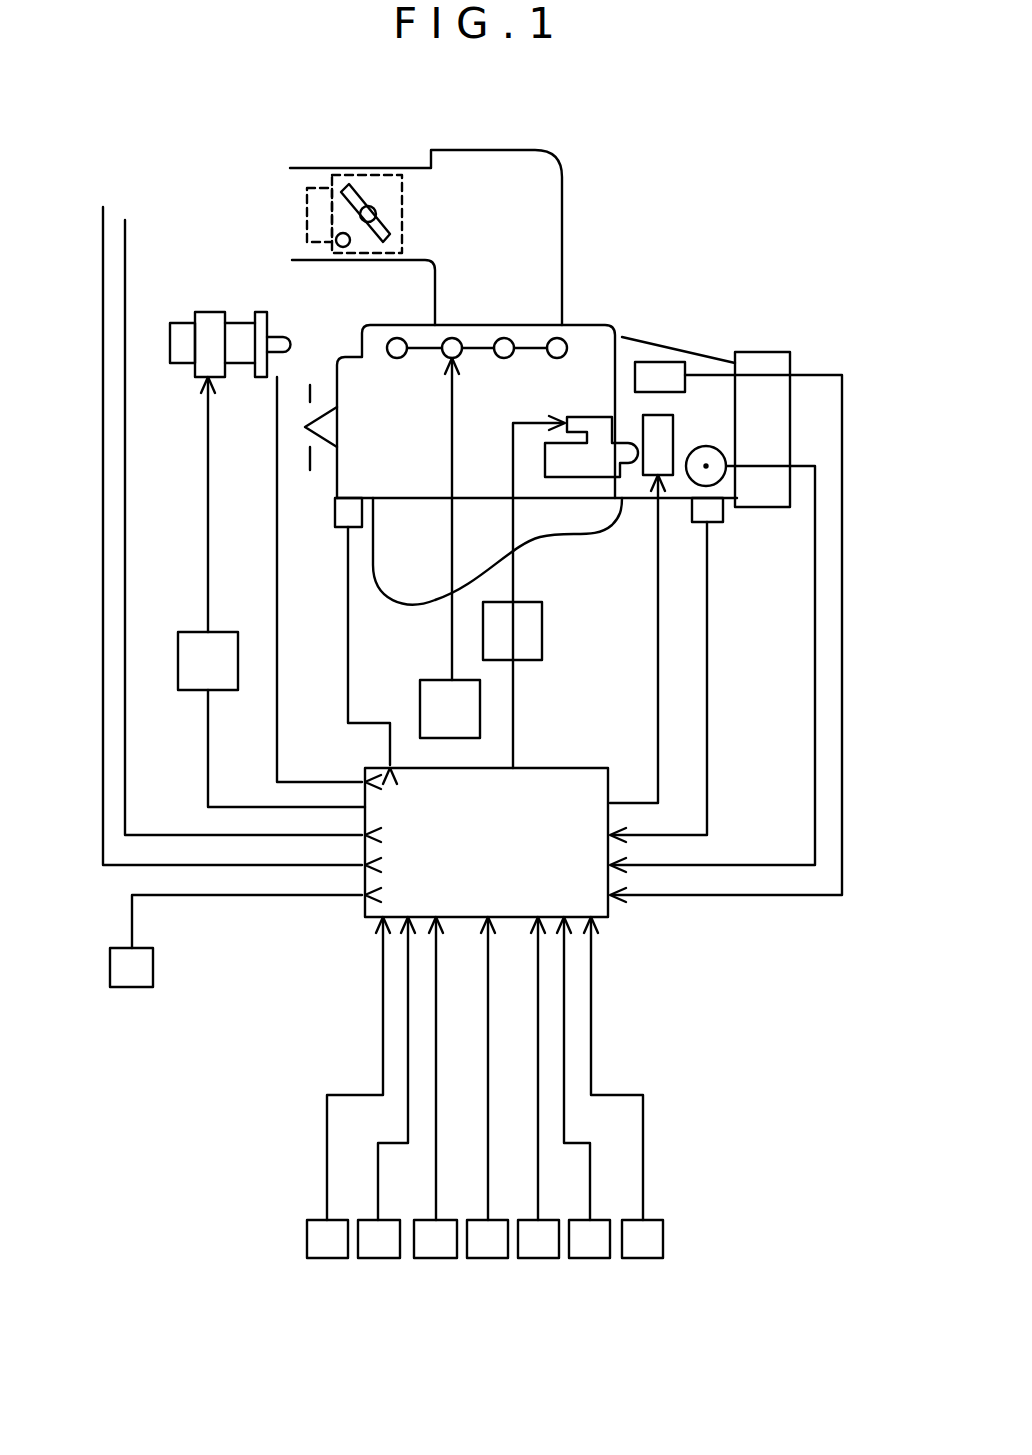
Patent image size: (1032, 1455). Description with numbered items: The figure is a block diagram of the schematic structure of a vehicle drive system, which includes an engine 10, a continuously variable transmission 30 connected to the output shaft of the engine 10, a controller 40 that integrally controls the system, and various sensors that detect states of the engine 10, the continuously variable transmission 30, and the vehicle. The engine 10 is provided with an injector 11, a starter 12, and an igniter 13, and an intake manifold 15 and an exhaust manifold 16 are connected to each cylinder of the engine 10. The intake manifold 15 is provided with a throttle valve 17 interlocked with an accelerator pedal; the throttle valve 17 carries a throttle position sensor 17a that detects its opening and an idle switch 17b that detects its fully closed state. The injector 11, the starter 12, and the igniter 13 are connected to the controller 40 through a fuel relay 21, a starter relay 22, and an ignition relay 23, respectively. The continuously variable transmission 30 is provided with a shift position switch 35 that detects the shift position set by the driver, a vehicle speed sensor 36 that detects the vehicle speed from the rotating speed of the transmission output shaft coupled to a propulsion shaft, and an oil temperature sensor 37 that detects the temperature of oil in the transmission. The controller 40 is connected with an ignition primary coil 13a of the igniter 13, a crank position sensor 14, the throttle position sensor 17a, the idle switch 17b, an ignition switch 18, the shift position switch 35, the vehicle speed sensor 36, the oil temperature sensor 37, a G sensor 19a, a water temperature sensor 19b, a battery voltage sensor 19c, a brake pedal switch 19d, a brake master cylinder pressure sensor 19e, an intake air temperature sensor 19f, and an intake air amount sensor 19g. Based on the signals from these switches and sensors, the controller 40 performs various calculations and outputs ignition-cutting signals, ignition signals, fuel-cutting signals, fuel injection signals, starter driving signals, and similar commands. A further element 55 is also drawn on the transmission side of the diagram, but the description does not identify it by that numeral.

The engine 10 is at (583, 325).
The injector 11 is at (395, 338).
The starter 12 is at (633, 462).
The igniter 13 is at (182, 335).
The ignition primary coil 13a is at (280, 340).
The crank position sensor 14 is at (345, 512).
The intake manifold 15 is at (481, 148).
The exhaust manifold 16 is at (398, 605).
The throttle valve 17 is at (358, 180).
The throttle position sensor 17a is at (322, 187).
The idle switch 17b is at (387, 172).
The ignition switch 18 is at (130, 990).
The G sensor 19a is at (326, 1260).
The water temperature sensor 19b is at (378, 1260).
The battery voltage sensor 19c is at (436, 1260).
The brake pedal switch 19d is at (490, 1260).
The brake master cylinder pressure sensor 19e is at (538, 1260).
The intake air temperature sensor 19f is at (590, 1260).
The intake air amount sensor 19g is at (643, 1260).
The fuel relay 21 is at (432, 708).
The starter relay 22 is at (540, 628).
The ignition relay 23 is at (178, 652).
The continuously variable transmission 30 is at (703, 346).
The shift position switch 35 is at (650, 368).
The vehicle speed sensor 36 is at (717, 475).
The oil temperature sensor 37 is at (720, 523).
The controller 40 is at (365, 912).
The EGR valve 55 is at (673, 447).